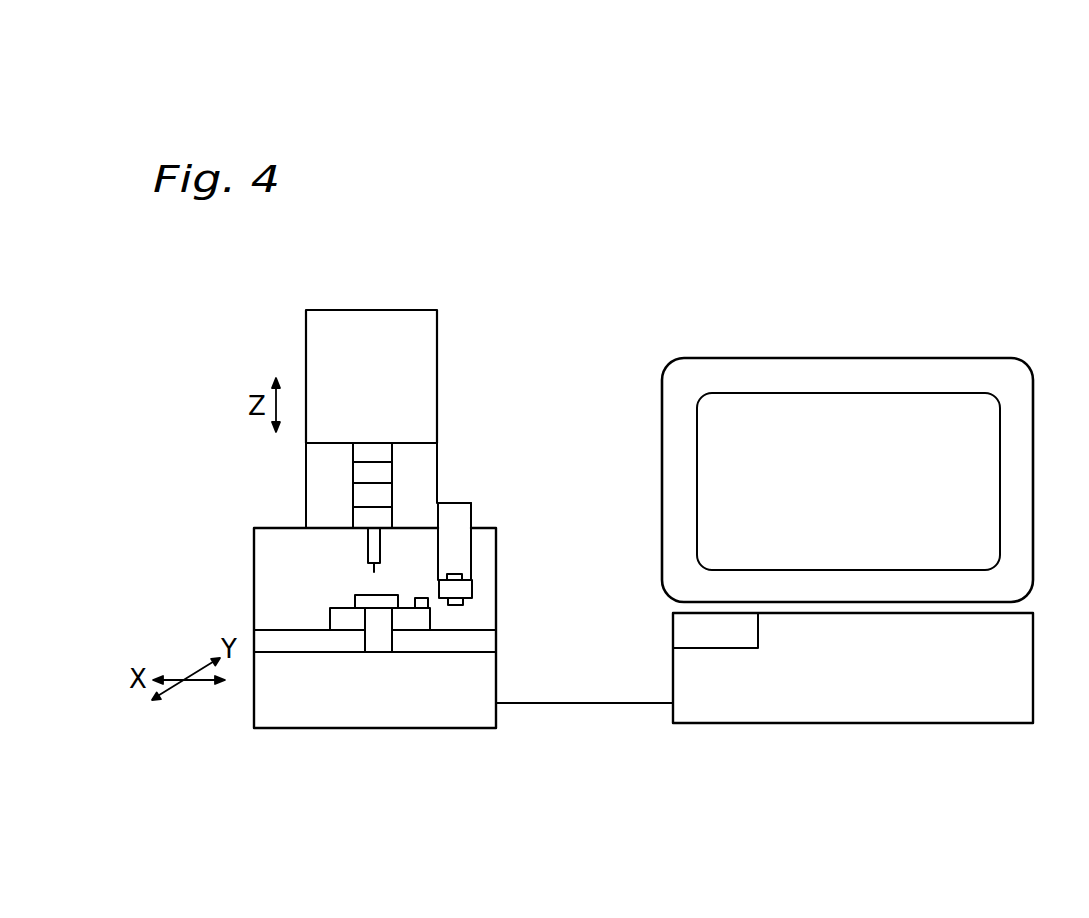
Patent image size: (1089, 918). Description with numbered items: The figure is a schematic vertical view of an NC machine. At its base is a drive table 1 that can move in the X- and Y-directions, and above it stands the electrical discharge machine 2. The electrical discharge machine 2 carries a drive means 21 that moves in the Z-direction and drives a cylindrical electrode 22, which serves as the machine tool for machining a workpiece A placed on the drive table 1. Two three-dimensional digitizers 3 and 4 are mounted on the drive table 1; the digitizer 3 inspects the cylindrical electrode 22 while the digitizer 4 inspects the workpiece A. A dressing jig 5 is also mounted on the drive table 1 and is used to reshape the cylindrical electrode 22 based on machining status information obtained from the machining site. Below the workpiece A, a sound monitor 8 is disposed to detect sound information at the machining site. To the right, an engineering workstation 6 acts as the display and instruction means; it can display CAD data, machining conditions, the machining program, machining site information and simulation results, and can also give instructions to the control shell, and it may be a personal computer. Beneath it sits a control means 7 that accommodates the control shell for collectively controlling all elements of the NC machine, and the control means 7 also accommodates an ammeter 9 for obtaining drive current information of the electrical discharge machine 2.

The drive table 1 is at (283, 643).
The electrical discharge machine 2 is at (377, 310).
The drive means 21 is at (422, 387).
The cylindrical electrode 22 is at (368, 545).
The 3-dimensional digitizer 3 is at (450, 574).
The 3-dimensional digitizer 4 is at (460, 606).
The dressing jig 5 is at (428, 606).
The engineering workstation 6 is at (977, 432).
The control means 7 is at (1015, 660).
The sound monitor 8 is at (380, 645).
The ammeter 9 is at (713, 645).
The workpiece A is at (380, 605).